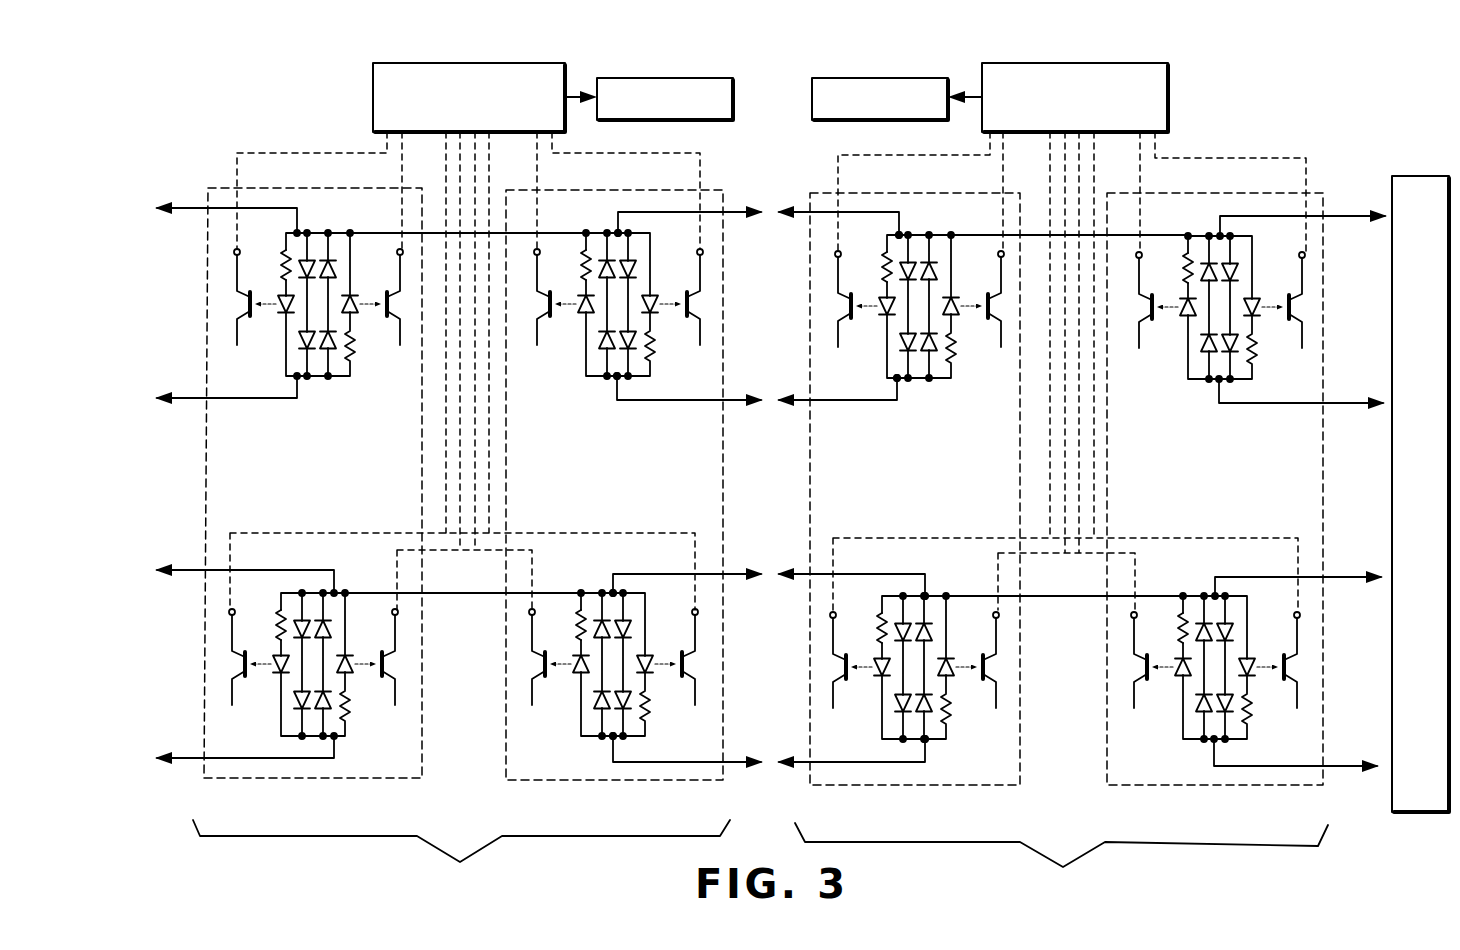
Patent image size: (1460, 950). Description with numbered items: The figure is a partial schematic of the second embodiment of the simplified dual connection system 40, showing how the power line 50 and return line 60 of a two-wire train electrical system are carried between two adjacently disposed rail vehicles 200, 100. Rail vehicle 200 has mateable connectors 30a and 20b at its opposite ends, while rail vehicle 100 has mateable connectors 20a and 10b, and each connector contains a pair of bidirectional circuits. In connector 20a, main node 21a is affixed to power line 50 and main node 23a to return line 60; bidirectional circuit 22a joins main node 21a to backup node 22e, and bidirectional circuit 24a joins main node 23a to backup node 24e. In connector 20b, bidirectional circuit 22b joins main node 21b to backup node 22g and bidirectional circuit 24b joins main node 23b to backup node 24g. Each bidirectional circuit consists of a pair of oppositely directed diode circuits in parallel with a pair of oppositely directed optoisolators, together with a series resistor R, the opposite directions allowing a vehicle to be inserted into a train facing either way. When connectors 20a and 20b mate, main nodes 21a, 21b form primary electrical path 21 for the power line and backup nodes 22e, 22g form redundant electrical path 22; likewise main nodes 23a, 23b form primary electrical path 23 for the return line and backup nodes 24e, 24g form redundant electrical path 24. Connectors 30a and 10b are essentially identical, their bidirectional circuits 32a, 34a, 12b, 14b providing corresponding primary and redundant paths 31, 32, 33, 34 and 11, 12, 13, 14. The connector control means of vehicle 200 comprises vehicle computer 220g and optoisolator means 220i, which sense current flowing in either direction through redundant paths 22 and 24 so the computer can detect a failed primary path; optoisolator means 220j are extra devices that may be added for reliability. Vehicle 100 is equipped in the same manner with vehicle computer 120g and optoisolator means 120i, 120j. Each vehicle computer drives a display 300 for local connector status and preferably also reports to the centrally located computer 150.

The simplified dual connection system 40 is at (260, 128).
The vehicle computer 220g is at (373, 97).
The vehicle computer 120g is at (1168, 97).
The display 300 is at (733, 97).
The centrally located computer 150 is at (1443, 664).
The mateable connector 30a is at (211, 188).
The mateable connector 20b is at (723, 190).
The mateable connector 20a is at (810, 193).
The mateable connector 10b is at (1323, 193).
The power line 50 is at (385, 233).
The return line 60 is at (460, 593).
The bidirectional circuit 32a is at (320, 395).
The bidirectional circuit 22b is at (594, 397).
The bidirectional circuit 22a is at (936, 395).
The bidirectional circuit 12b is at (1198, 395).
The bidirectional circuit 34a is at (355, 576).
The bidirectional circuit 24b is at (559, 576).
The bidirectional circuit 24a is at (956, 578).
The bidirectional circuit 14b is at (1196, 578).
The resistor R is at (1177, 626).
The optoisolator means 220j is at (367, 728).
The optoisolator means 220i is at (667, 728).
The optoisolator means 120j is at (968, 731).
The optoisolator means 120i is at (1269, 731).
The primary electrical path 31 is at (158, 214).
The redundant electrical path 32 is at (158, 404).
The primary electrical path 33 is at (158, 576).
The redundant electrical path 34 is at (158, 764).
The primary electrical path 21 is at (771, 218).
The redundant electrical path 22 is at (771, 406).
The primary electrical path 23 is at (771, 580).
The redundant electrical path 24 is at (771, 768).
The primary electrical path 11 is at (1387, 221).
The redundant electrical path 12 is at (1385, 408).
The primary electrical path 13 is at (1383, 582).
The redundant electrical path 14 is at (1379, 771).
The main node 21b is at (618, 233).
The main node 21a is at (899, 235).
The main node 23b is at (613, 593).
The main node 23a is at (925, 596).
The backup node 22g is at (617, 378).
The backup node 22e is at (897, 381).
The backup node 24g is at (611, 738).
The backup node 24e is at (925, 741).
The rail vehicle 200 is at (461, 859).
The rail vehicle 100 is at (1061, 862).